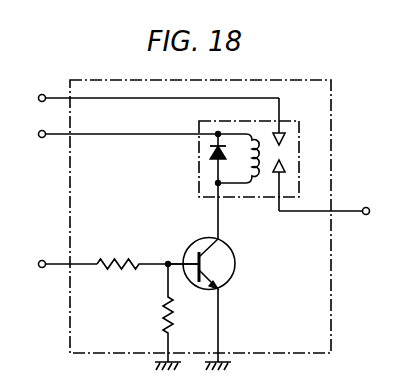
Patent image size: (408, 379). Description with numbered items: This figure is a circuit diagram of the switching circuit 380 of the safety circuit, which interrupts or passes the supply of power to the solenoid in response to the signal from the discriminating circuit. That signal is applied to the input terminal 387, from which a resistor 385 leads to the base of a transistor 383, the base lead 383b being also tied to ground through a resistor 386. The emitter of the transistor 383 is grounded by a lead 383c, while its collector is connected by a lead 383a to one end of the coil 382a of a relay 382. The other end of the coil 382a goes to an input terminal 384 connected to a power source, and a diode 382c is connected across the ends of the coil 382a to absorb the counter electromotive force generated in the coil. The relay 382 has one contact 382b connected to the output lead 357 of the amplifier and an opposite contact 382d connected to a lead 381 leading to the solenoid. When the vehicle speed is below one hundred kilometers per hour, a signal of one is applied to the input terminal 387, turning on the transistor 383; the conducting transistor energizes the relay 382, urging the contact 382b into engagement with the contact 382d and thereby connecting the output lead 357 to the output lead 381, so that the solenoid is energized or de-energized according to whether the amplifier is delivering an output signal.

The output lead 357 is at (61, 97).
The switching circuit 380 is at (245, 80).
The lead 381 is at (349, 213).
The relay 382 is at (302, 121).
The coil 382a is at (250, 137).
The contact 382b is at (285, 140).
The diode 382c is at (207, 153).
The opposite contact 382d is at (285, 165).
The transistor 383 is at (235, 265).
The lead 383a is at (222, 225).
The base 383b is at (176, 244).
The lead 383c is at (222, 318).
The input terminal 384 is at (53, 136).
The resistor 385 is at (114, 270).
The resistor 386 is at (166, 310).
The input terminal 387 is at (54, 266).